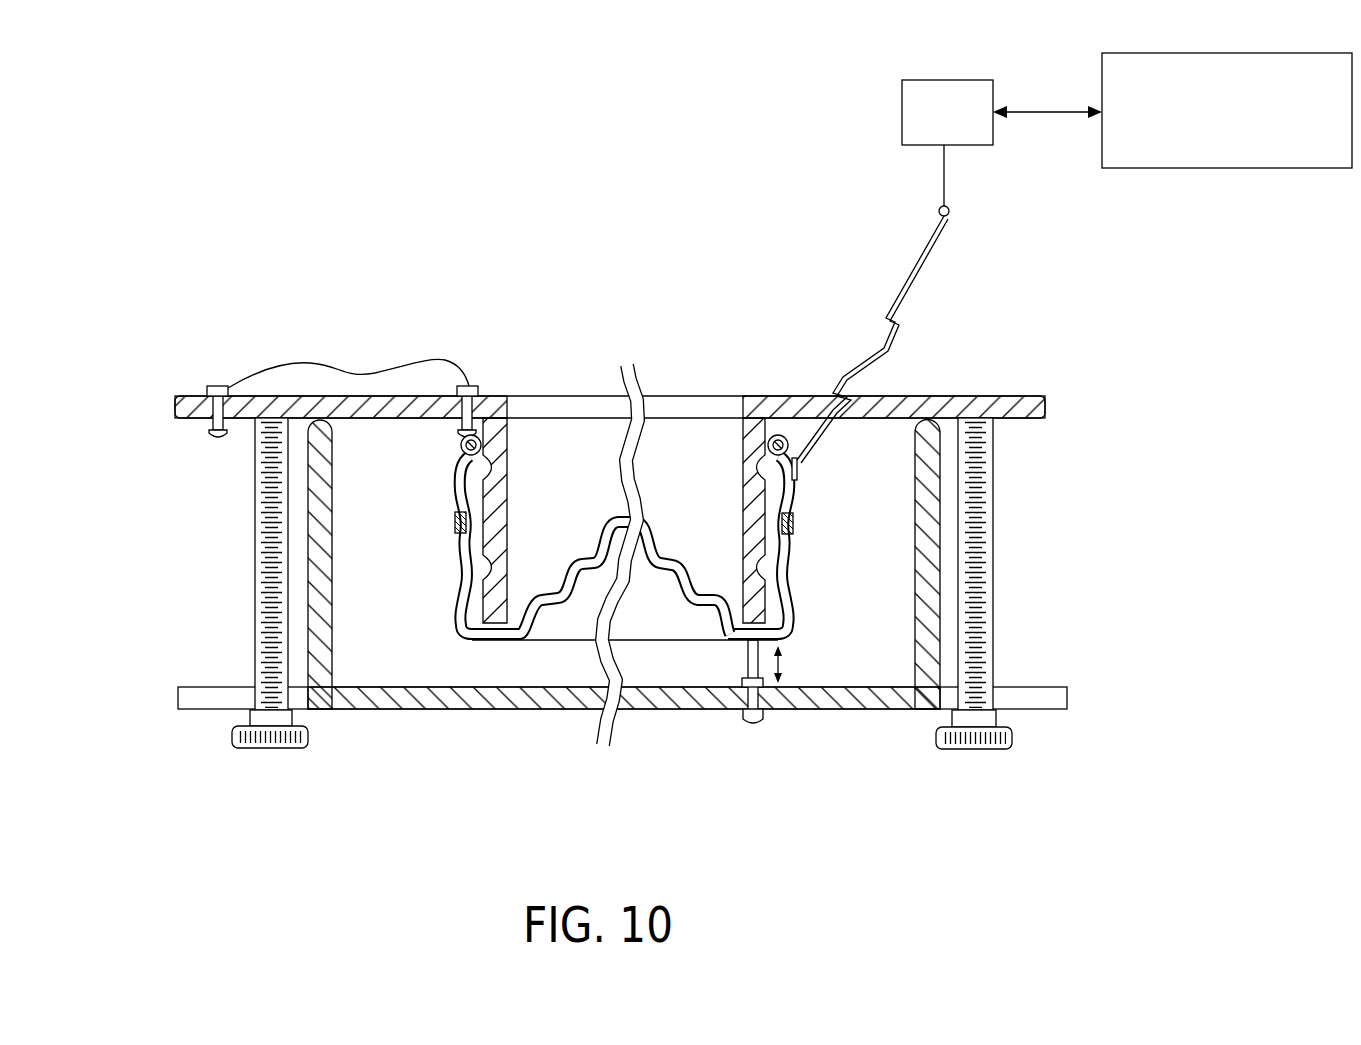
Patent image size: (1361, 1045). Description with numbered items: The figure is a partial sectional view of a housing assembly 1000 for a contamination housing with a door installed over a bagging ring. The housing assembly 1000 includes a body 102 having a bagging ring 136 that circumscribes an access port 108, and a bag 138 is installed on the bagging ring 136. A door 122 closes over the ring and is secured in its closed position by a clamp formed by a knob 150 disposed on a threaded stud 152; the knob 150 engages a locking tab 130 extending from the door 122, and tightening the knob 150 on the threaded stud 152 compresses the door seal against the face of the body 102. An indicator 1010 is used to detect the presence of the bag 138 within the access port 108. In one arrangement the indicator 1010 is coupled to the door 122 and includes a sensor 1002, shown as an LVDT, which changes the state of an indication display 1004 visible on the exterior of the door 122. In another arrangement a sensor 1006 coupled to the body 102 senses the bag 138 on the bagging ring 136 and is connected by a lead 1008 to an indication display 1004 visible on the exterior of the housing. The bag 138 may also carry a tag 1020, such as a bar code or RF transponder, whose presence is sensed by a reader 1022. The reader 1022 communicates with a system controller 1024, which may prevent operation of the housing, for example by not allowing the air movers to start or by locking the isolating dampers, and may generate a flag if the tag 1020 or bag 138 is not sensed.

The body 102 is at (378, 396).
The access port 108 is at (575, 396).
The door 122 is at (548, 709).
The locking tab 130 is at (215, 687).
The bagging ring 136 is at (510, 503).
The bag 138 is at (558, 565).
The knob 150 is at (310, 738).
The threaded stud 152 is at (257, 541).
The housing assembly 1000 is at (730, 236).
The sensor 1002 is at (730, 668).
The indication display 1004 is at (212, 430).
The sensor 1006 is at (472, 386).
The lead 1008 is at (278, 370).
The indicator 1010 is at (443, 442).
The tag 1020 is at (797, 478).
The reader 1022 is at (902, 112).
The system controller 1024 is at (1220, 168).